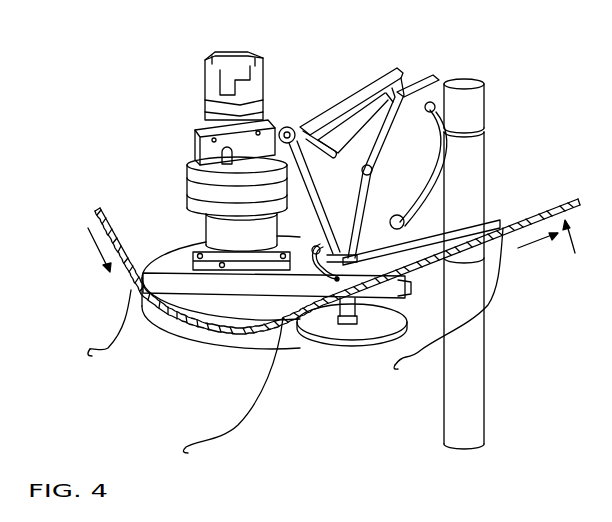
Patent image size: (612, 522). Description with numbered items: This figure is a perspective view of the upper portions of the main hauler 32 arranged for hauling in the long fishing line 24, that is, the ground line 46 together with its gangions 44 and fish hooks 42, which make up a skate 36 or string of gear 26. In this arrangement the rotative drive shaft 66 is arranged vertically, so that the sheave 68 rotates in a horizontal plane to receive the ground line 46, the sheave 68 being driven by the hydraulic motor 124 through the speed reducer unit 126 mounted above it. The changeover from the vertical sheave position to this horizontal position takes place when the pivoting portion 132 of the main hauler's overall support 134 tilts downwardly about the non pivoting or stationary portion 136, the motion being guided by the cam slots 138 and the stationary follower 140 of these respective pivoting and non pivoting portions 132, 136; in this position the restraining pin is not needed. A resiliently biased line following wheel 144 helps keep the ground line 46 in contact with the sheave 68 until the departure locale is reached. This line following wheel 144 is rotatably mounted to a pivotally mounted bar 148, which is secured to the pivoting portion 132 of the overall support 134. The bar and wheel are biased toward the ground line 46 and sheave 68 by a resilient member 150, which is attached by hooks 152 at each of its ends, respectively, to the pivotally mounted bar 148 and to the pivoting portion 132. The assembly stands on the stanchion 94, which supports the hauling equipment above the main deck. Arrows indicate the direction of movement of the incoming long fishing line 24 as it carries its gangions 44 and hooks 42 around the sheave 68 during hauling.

The long fishing line 24 is at (108, 226).
The string of gear 26 is at (550, 248).
The main hauler 32 is at (199, 350).
The skate 36 is at (537, 212).
The fish hooks 42 is at (86, 351).
The gangions 44 is at (124, 313).
The ground line 46 is at (96, 213).
The rotative drive shaft 66 is at (192, 213).
The sheave 68 is at (255, 352).
The stanchion 94 is at (486, 343).
The hydraulic motor 124 is at (207, 80).
The speed reducer unit 126 is at (188, 178).
The pivoting portion 132 is at (431, 75).
The overall support 134 is at (486, 138).
The non pivoting portion 136 is at (335, 141).
The cam slots 138 is at (436, 116).
The stationary follower 140 is at (406, 222).
The line following wheel 144 is at (340, 347).
The pivotally mounted bar 148 is at (168, 294).
The resilient member 150 is at (282, 125).
The hooks 152 is at (310, 125).